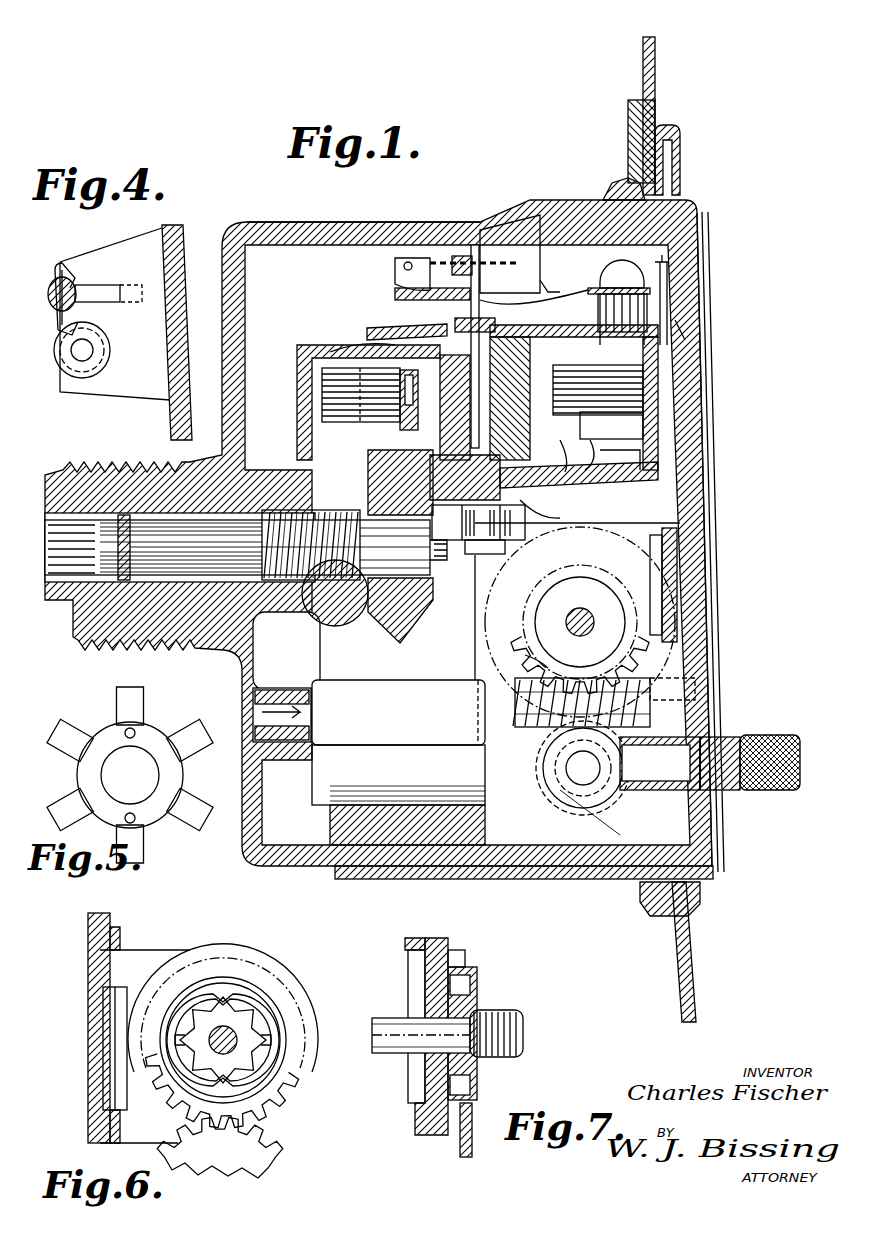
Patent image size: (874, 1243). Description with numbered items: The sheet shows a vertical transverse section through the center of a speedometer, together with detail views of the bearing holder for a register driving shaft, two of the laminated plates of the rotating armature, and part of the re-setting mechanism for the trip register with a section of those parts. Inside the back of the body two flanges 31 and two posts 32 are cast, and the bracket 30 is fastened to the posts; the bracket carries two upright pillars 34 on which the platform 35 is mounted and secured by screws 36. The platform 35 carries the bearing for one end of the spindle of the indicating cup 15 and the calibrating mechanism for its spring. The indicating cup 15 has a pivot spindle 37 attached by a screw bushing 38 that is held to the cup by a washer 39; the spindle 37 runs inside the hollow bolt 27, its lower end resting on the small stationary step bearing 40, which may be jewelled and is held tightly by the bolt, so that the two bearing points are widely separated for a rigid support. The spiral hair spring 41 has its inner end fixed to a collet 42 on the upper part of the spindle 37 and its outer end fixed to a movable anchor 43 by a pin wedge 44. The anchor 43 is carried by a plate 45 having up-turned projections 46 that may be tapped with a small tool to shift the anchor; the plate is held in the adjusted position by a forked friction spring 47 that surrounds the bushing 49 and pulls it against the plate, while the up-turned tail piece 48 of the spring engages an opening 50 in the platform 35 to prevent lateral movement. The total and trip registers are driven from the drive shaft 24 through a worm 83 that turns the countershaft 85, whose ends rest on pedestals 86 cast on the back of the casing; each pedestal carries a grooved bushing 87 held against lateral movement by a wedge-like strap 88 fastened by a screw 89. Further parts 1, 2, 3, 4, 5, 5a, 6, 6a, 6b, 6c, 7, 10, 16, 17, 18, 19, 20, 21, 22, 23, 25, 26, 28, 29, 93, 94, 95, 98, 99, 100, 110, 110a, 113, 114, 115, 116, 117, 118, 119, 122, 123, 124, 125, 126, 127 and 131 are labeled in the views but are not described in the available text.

In FIG. 1, the housing casing 1 is at (285, 224).
In FIG. 4, the housing casing 1 is at (186, 310).
In FIG. 1, the casing wall / plate 2 is at (690, 202).
In FIG. 6, the casing wall / plate 2 is at (88, 937).
In FIG. 1, the cover plate 3 is at (708, 370).
In FIG. 1, the bracket plate 4 is at (700, 592).
In FIG. 6, the bracket plate 4 is at (110, 1062).
In FIG. 1, the casing side wall 5 is at (690, 405).
In FIG. 1, the side wall flange 5a is at (688, 330).
In FIG. 1, the mounting bracket 6 is at (560, 880).
In FIG. 1, the bracket flange 6a is at (614, 188).
In FIG. 1, the bracket clip 6b is at (681, 152).
In FIG. 1, the bracket plate 6c is at (656, 45).
In FIG. 1, the fastening block 7 is at (636, 104).
In FIG. 1, the motor field 10 is at (328, 832).
In FIG. 1, the indicating cup 15 is at (298, 386).
In FIG. 1, the coil 16 is at (330, 370).
In FIG. 5, the coil 16 is at (78, 778).
In FIG. 1, the coil flange 17 is at (322, 375).
In FIG. 5, the coil flange 17 is at (118, 702).
In FIG. 5, the flange holes 18 is at (130, 738).
In FIG. 1, the armature 19 is at (400, 425).
In FIG. 1, the contact box 20 is at (598, 428).
In FIG. 1, the contact spring 21 is at (598, 468).
In FIG. 1, the contact spring 22 is at (575, 470).
In FIG. 1, the bevel gear 23 is at (418, 620).
In FIG. 1, the drive shaft 24 is at (205, 640).
In FIG. 1, the drive shaft 25 is at (46, 532).
In FIG. 1, the magnet core 26 is at (440, 372).
In FIG. 1, the hollow bolt 27 is at (560, 380).
In FIG. 1, the magnet core 28 is at (510, 380).
In FIG. 1, the gear pitch circle 29 is at (512, 542).
In FIG. 1, the bracket 30 is at (678, 480).
In FIG. 1, the flanges 31 is at (485, 556).
In FIG. 1, the posts 32 is at (440, 562).
In FIG. 1, the upright pillars 34 is at (630, 310).
In FIG. 1, the platform 35 is at (668, 300).
In FIG. 1, the screws 36 is at (670, 264).
In FIG. 1, the pivot spindle 37 is at (540, 482).
In FIG. 1, the screw bushing 38 is at (440, 345).
In FIG. 1, the washer 39 is at (380, 350).
In FIG. 1, the step bearing 40 is at (540, 526).
In FIG. 1, the spiral hair spring 41 is at (506, 264).
In FIG. 1, the collet 42 is at (475, 245).
In FIG. 1, the movable anchor 43 is at (400, 260).
In FIG. 1, the pin wedge 44 is at (410, 262).
In FIG. 1, the plate 45 is at (546, 288).
In FIG. 1, the projections 46 is at (548, 292).
In FIG. 1, the friction spring 47 is at (410, 300).
In FIG. 1, the tail piece 48 is at (578, 300).
In FIG. 1, the bushing 49 is at (455, 285).
In FIG. 1, the opening 50 is at (620, 270).
In FIG. 1, the worm 83 is at (290, 512).
In FIG. 1, the countershaft 85 is at (340, 622).
In FIG. 4, the pedestals 86 is at (108, 272).
In FIG. 4, the grooved bushing 87 is at (60, 362).
In FIG. 4, the wedge-like strap 88 is at (52, 282).
In FIG. 4, the screw 89 is at (48, 318).
In FIG. 1, the gear teeth 93 is at (640, 655).
In FIG. 1, the gear tooth 94 is at (540, 660).
In FIG. 1, the gear shaft 95 is at (585, 610).
In FIG. 6, the gear shaft 95 is at (222, 1030).
In FIG. 7, the gear shaft 95 is at (400, 1036).
In FIG. 1, the worm 98 is at (518, 690).
In FIG. 1, the plate 99 is at (700, 525).
In FIG. 1, the block 100 is at (715, 692).
In FIG. 7, the plate 110 is at (420, 942).
In FIG. 7, the spring 110a is at (506, 1018).
In FIG. 6, the housing plate 113 is at (262, 975).
In FIG. 6, the lug 114 is at (105, 980).
In FIG. 6, the lug 115 is at (110, 1116).
In FIG. 6, the cam 116 is at (270, 1020).
In FIG. 7, the cam 116 is at (478, 986).
In FIG. 6, the gear 117 is at (262, 1082).
In FIG. 7, the gear 117 is at (480, 1086).
In FIG. 6, the stop 118 is at (165, 1040).
In FIG. 6, the ring 119 is at (286, 1076).
In FIG. 7, the ring 119 is at (462, 958).
In FIG. 1, the knob 122 is at (782, 780).
In FIG. 1, the nut 123 is at (652, 796).
In FIG. 1, the washer 124 is at (722, 792).
In FIG. 1, the bearing 125 is at (578, 782).
In FIG. 1, the bearing housing 126 is at (535, 766).
In FIG. 6, the pinion 127 is at (250, 1160).
In FIG. 1, the bearing line 131 is at (602, 800).